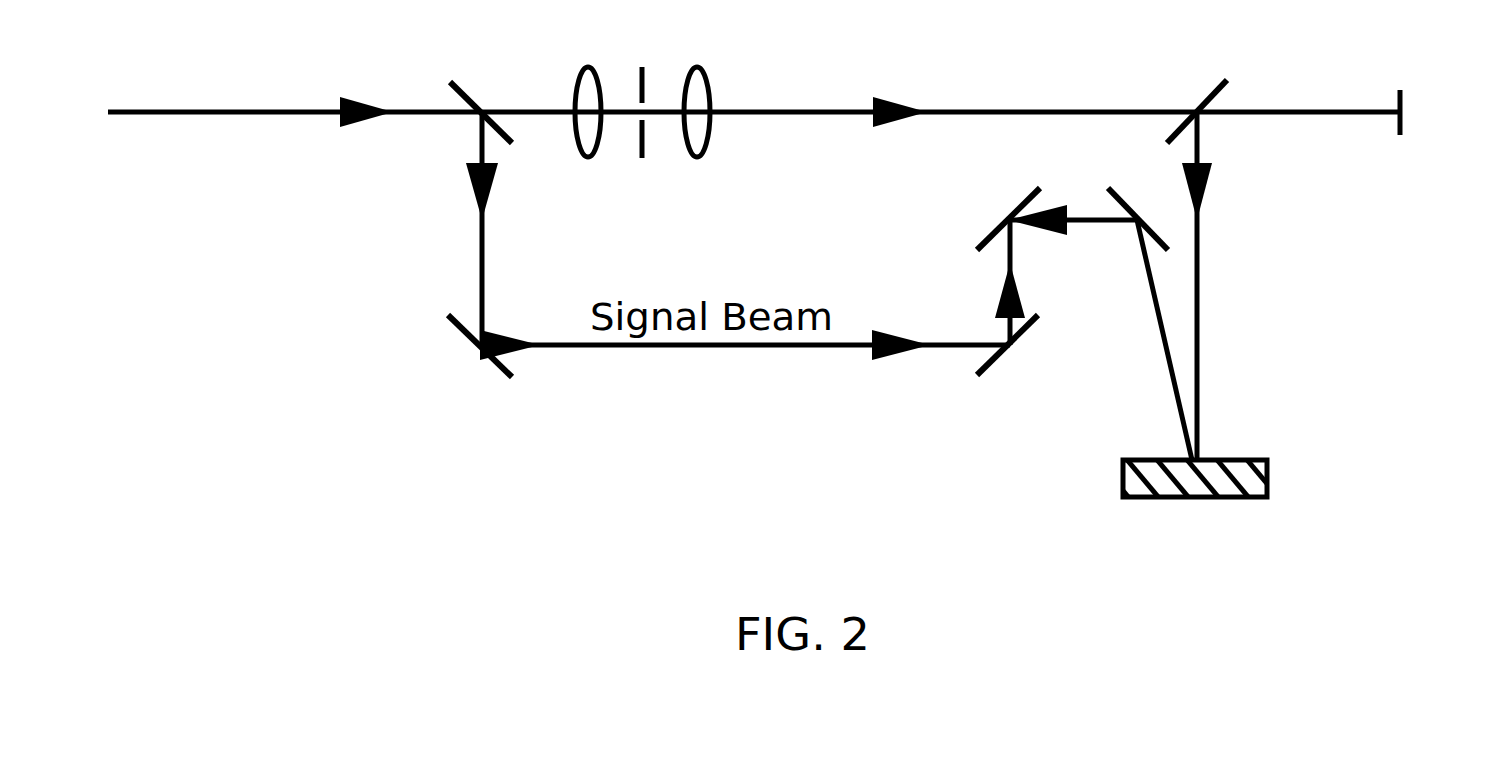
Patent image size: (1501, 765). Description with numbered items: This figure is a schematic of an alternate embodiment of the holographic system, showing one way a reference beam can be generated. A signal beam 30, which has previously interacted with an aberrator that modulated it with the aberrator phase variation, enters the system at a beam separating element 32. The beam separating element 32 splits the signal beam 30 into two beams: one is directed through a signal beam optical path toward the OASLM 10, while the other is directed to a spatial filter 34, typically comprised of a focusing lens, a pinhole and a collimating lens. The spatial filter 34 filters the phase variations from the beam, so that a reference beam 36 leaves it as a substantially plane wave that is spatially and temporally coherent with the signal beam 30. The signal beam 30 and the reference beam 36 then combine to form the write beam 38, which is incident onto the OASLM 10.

The OASLM 10 is at (1195, 503).
The signal beam 30 is at (280, 87).
The beam separating element 32 is at (524, 148).
The spatial filter 34 is at (608, 84).
The reference beam 36 is at (926, 93).
The write beam 38 is at (1306, 340).